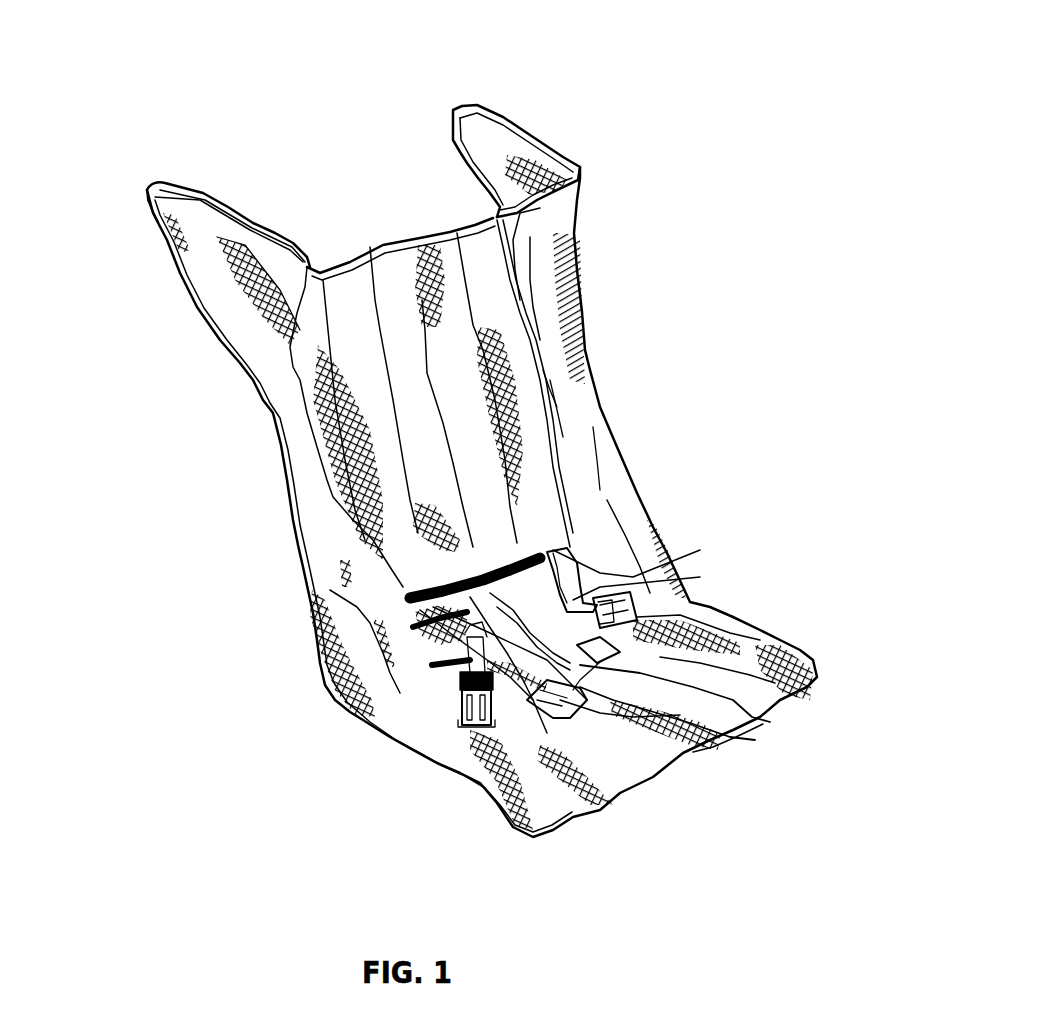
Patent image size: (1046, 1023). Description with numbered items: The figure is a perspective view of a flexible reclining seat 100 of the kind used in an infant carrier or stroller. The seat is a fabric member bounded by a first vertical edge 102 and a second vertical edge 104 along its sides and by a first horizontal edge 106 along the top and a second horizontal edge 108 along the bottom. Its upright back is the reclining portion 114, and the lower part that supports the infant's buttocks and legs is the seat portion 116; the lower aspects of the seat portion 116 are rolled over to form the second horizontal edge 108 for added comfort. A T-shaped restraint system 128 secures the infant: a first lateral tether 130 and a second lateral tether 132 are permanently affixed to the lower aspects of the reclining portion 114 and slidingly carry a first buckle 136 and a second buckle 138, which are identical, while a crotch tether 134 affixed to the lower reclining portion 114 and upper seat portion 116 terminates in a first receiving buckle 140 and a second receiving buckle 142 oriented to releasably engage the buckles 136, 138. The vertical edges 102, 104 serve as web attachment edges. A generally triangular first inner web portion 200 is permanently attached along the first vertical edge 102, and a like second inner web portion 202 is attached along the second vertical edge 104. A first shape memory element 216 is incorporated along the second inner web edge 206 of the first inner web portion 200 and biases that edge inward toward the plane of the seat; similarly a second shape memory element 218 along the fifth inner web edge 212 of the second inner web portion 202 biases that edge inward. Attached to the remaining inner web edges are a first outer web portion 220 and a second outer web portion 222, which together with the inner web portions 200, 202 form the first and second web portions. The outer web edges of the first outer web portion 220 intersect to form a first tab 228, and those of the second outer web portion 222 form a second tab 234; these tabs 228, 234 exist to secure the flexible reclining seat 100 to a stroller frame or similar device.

The flexible reclining seat 100 is at (819, 186).
The first vertical edge 102 is at (287, 510).
The second vertical edge 104 is at (547, 412).
The first horizontal edge 106 is at (387, 247).
The second horizontal edge 108 is at (650, 780).
The reclining portion 114 is at (413, 413).
The seat portion 116 is at (582, 728).
The T-shaped restraint system 128 is at (657, 658).
The first lateral tether 130 is at (457, 670).
The second lateral tether 132 is at (598, 600).
The crotch tether 134 is at (707, 747).
The first buckle 136 is at (460, 707).
The second buckle 138 is at (630, 600).
The first receiving buckle 140 is at (527, 720).
The second receiving buckle 142 is at (605, 647).
The first inner web portion 200 is at (290, 318).
The second inner web portion 202 is at (540, 245).
The second inner web edge 206 is at (303, 250).
The first shape memory element 216 is at (232, 196).
The fifth inner web edge 212 is at (582, 188).
The second shape memory element 218 is at (629, 358).
The first outer web portion 220 is at (147, 213).
The second outer web portion 222 is at (490, 143).
The first tab 228 is at (163, 240).
The second tab 234 is at (453, 135).